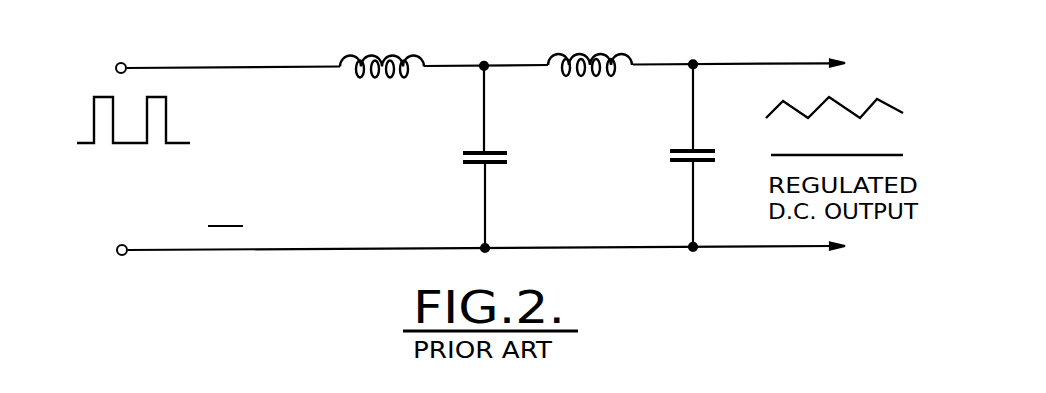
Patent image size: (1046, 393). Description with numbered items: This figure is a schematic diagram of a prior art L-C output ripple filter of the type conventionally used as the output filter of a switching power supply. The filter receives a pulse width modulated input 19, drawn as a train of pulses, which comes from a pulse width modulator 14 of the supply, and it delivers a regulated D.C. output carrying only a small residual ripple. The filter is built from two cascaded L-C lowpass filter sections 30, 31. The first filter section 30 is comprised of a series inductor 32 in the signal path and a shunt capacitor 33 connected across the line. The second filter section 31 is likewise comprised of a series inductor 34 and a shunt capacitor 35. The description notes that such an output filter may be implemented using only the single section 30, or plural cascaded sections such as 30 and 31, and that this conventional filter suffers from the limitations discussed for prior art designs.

The pulse width modulator (source of input) 14 is at (225, 214).
The pulse width modulated input 19 is at (76, 108).
The first L-C lowpass filter section 30 is at (393, 189).
The second L-C lowpass filter section 31 is at (603, 189).
The series inductor 32 is at (383, 52).
The shunt capacitor 33 is at (470, 165).
The series inductor 34 is at (593, 51).
The shunt capacitor 35 is at (689, 163).